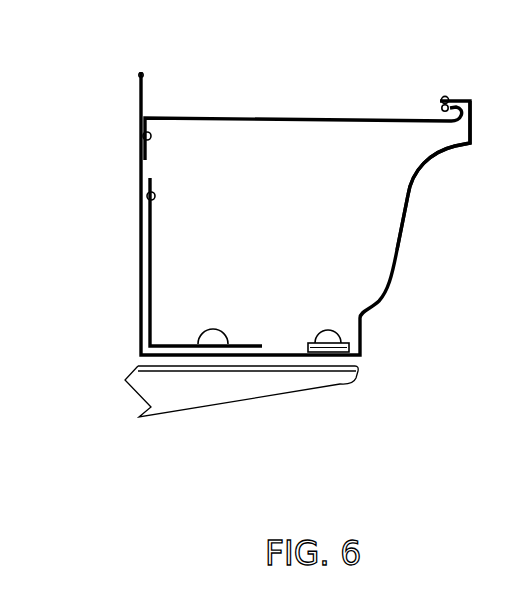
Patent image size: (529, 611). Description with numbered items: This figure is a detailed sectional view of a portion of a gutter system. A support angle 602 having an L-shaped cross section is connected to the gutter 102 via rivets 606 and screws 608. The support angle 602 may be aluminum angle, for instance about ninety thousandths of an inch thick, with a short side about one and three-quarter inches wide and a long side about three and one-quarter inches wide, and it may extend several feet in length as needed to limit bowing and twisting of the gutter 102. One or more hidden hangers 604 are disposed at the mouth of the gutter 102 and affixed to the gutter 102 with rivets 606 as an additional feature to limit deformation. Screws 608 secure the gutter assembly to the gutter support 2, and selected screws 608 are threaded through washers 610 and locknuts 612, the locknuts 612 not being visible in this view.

The gutter support 2 is at (235, 388).
The gutter 102 is at (403, 224).
The support angle 602 is at (160, 232).
The hidden hanger 604 is at (338, 118).
The rivet 606 is at (143, 137).
The screw 608 is at (213, 338).
The washer 610 is at (308, 348).
The locknut 612 is at (300, 325).